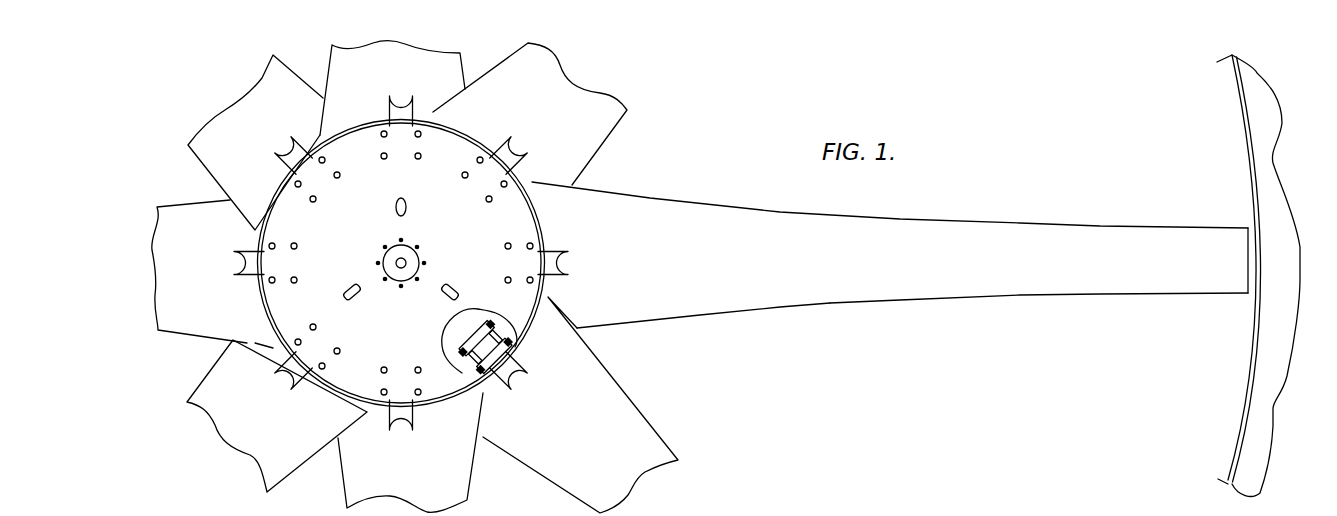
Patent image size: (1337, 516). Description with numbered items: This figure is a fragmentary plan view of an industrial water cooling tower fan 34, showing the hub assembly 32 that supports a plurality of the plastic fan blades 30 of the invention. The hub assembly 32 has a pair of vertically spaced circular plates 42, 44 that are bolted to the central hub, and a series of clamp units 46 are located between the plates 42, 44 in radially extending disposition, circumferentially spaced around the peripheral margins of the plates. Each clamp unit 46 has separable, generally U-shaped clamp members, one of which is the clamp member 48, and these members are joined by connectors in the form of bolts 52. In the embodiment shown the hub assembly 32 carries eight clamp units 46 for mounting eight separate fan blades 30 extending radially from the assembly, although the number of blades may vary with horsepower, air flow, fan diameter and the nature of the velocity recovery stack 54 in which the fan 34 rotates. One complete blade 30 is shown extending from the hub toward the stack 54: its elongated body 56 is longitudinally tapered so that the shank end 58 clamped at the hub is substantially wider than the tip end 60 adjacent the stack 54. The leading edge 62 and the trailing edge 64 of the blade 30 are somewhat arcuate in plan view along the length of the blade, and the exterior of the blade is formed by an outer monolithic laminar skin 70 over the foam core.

The plastic fan blade 30 is at (584, 70).
The hub assembly 32 is at (261, 303).
The fan 34 is at (646, 157).
The circular plate 42 is at (365, 157).
The circular plate 44 is at (463, 370).
The clamp unit 46 is at (520, 332).
The clamp member 48 is at (517, 367).
The bolt 52 is at (493, 387).
The velocity recovery stack 54 is at (1255, 323).
The elongated body 56 is at (881, 314).
The shank end 58 is at (540, 218).
The tip end 60 is at (1252, 267).
The leading edge 62 is at (832, 303).
The trailing edge 64 is at (833, 213).
The outer monolithic laminar skin 70 is at (934, 256).